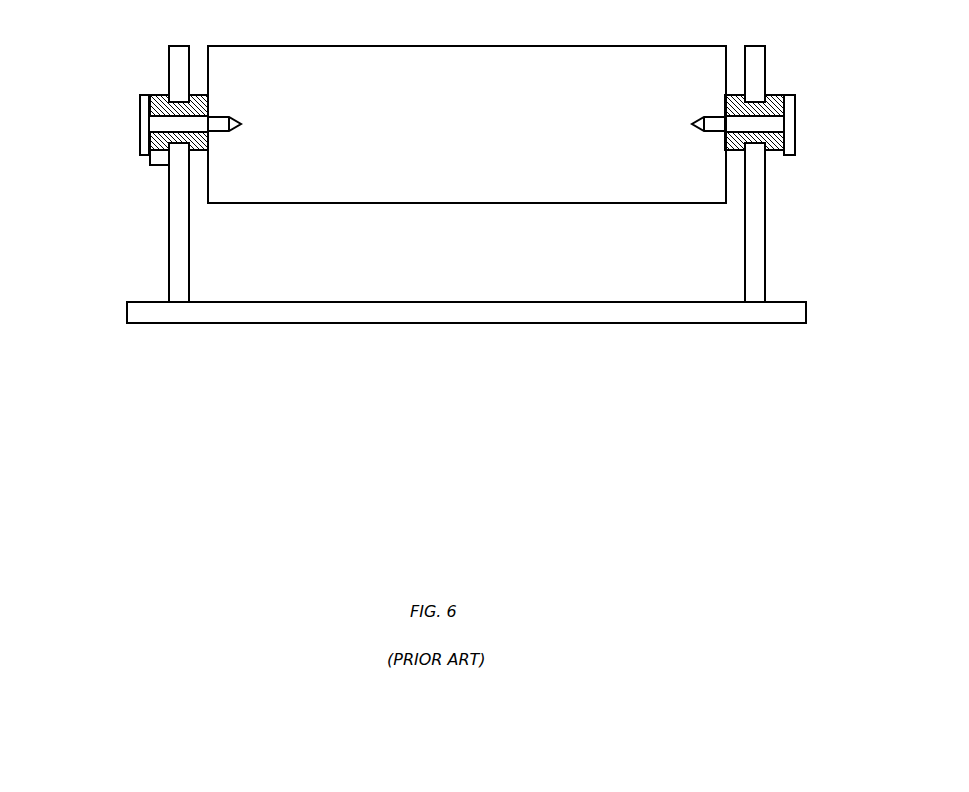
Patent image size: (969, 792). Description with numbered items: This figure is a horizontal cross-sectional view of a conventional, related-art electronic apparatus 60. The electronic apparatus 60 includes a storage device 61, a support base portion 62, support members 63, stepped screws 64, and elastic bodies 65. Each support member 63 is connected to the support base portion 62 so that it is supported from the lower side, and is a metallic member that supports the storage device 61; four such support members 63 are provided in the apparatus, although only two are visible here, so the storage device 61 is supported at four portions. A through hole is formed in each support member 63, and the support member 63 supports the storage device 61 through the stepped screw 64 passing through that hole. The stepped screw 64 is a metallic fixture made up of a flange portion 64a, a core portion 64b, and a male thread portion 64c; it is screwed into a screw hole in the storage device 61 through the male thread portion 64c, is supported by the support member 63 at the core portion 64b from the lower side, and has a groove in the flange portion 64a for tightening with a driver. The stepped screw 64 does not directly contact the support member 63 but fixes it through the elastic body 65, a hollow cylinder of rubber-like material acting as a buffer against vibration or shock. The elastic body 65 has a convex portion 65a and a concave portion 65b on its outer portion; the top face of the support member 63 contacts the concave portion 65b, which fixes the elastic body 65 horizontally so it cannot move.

The electronic apparatus 60 is at (467, 368).
The storage device 61 is at (583, 46).
The support base portion 62 is at (615, 302).
The support member 63 is at (177, 45).
The stepped screw 64 is at (466, 135).
The flange portion 64a is at (156, 127).
The core portion 64b is at (148, 120).
The male thread portion 64c is at (214, 117).
The elastic body 65 is at (465, 128).
The convex portion 65a is at (200, 148).
The concave portion 65b is at (181, 148).